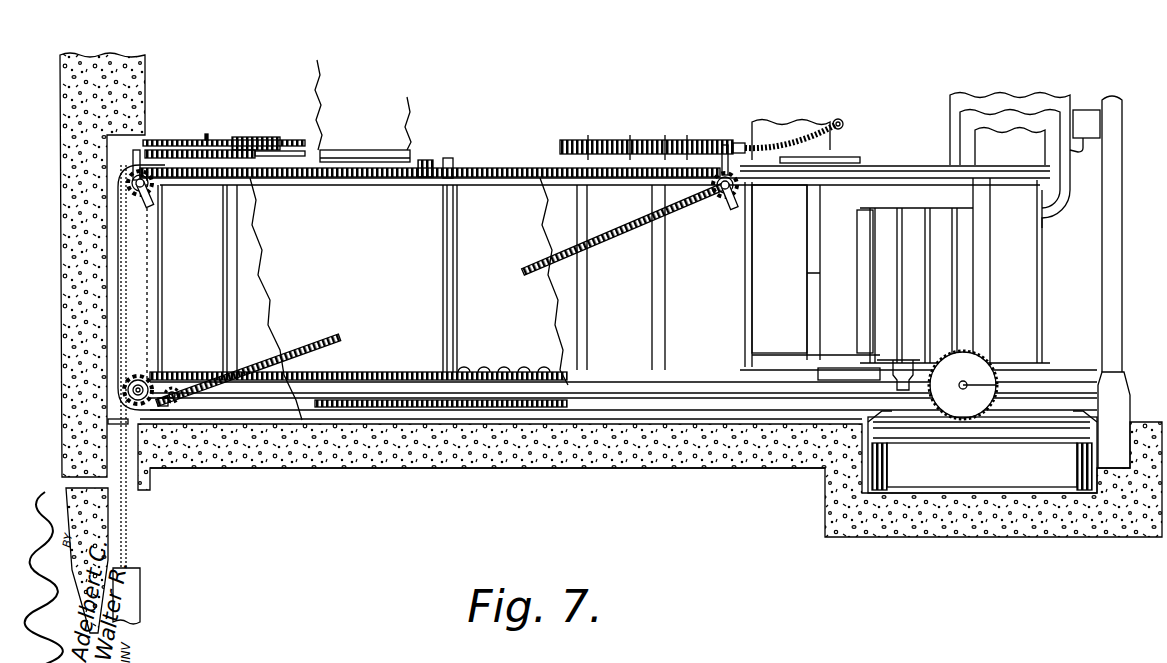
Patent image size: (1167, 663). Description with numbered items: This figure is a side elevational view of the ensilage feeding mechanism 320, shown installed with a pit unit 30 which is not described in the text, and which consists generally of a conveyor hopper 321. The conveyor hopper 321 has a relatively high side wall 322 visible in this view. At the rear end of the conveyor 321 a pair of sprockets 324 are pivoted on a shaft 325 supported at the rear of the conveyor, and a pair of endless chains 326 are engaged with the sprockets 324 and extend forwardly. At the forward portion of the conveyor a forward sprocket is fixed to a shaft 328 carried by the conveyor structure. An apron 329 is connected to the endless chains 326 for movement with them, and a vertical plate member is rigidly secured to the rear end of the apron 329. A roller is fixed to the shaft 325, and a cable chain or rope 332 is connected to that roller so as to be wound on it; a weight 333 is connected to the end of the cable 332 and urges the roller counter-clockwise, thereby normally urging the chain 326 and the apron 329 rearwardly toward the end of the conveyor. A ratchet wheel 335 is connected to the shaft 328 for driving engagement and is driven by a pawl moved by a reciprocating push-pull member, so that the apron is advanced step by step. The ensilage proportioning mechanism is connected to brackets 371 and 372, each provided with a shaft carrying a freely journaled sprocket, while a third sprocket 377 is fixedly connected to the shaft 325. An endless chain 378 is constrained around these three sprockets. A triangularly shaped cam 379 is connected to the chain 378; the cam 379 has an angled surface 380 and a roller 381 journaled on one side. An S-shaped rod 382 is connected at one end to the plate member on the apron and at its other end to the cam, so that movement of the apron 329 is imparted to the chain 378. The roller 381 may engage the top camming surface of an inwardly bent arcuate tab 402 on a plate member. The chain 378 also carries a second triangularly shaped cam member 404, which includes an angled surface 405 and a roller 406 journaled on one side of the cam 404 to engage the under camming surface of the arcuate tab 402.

The pit unit 30 is at (1007, 470).
The ensilage feeding mechanism 320 is at (450, 410).
The conveyor hopper 321 is at (318, 472).
The relatively high side wall 322 is at (266, 272).
The sprockets 324 is at (140, 212).
The shaft 325 is at (154, 387).
The endless chains 326 is at (396, 371).
The shaft 328 is at (966, 382).
The apron 329 is at (504, 370).
The cable chain or rope 332 is at (127, 527).
The weight 333 is at (141, 588).
The ratchet wheel 335 is at (998, 395).
The bracket 371 is at (728, 204).
The bracket 372 is at (151, 204).
The third sprocket 377 is at (146, 376).
The endless chain 378 is at (366, 178).
The triangularly shaped cam 379 is at (422, 180).
The angled surface 380 is at (423, 160).
The roller 381 is at (420, 160).
The S-shaped rod 382 is at (448, 178).
The arcuate tab 402 is at (147, 167).
The triangularly shaped cam member 404 is at (166, 404).
The angled surface 405 is at (135, 410).
The roller 406 is at (180, 399).